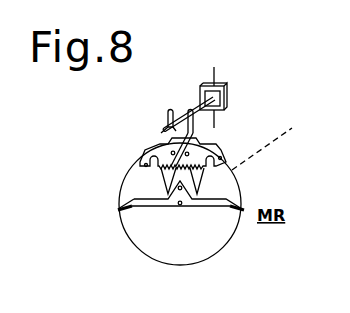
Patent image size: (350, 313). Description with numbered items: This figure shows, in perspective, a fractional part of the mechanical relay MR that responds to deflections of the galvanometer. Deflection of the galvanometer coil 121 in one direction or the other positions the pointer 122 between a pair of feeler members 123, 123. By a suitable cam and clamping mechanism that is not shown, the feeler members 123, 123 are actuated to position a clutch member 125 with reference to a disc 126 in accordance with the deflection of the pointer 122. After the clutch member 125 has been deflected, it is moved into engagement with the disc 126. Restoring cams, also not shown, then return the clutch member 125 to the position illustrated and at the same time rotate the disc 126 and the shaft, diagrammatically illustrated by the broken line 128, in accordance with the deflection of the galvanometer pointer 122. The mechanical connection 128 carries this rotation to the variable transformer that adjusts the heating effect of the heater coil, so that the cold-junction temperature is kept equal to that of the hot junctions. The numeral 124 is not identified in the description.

The galvanometer coil 121 is at (229, 101).
The pointer 122 is at (203, 107).
The feeler members 123 is at (166, 114).
The toothed clamp jaw 124 is at (156, 166).
The clutch member 125 is at (191, 209).
The disc 126 is at (200, 253).
The mechanical connection 128 is at (264, 145).